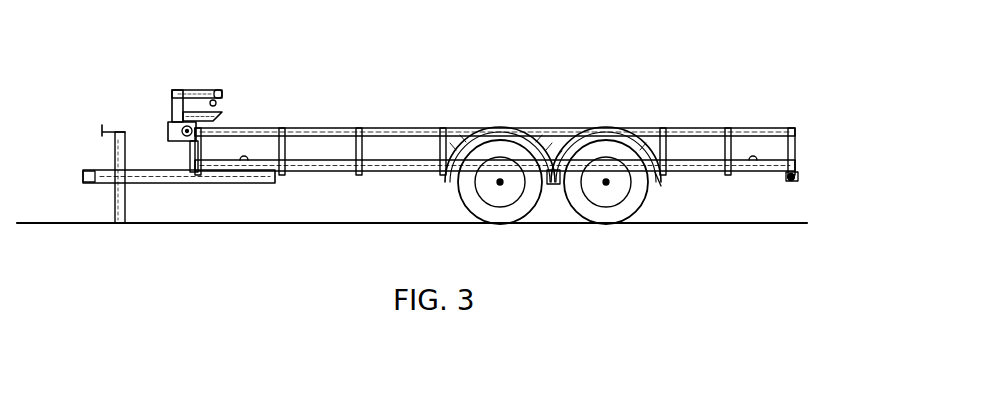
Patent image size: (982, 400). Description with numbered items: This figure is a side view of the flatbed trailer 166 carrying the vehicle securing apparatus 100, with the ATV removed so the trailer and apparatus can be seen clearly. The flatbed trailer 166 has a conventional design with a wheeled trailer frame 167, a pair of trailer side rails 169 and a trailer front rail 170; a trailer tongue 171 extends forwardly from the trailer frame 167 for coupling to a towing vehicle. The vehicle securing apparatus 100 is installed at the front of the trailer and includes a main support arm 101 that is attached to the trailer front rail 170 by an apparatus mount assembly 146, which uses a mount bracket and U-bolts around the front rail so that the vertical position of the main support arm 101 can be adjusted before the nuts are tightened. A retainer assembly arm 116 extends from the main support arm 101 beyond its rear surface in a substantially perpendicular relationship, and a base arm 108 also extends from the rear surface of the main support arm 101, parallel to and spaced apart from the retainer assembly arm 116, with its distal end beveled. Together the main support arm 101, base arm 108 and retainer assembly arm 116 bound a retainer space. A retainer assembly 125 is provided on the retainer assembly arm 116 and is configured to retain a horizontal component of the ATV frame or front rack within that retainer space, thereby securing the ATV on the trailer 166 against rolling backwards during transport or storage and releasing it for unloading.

The vehicle securing apparatus 100 is at (194, 62).
The main support arm 101 is at (160, 110).
The base arm 108 is at (233, 104).
The retainer assembly arm 116 is at (200, 78).
The retainer assembly 125 is at (233, 78).
The apparatus mount assembly 146 is at (155, 125).
The flatbed trailer 166 is at (700, 115).
The trailer frame 167 is at (770, 178).
The trailer side rails 169 is at (650, 128).
The trailer front rail 170 is at (192, 145).
The trailer tongue 171 is at (172, 170).